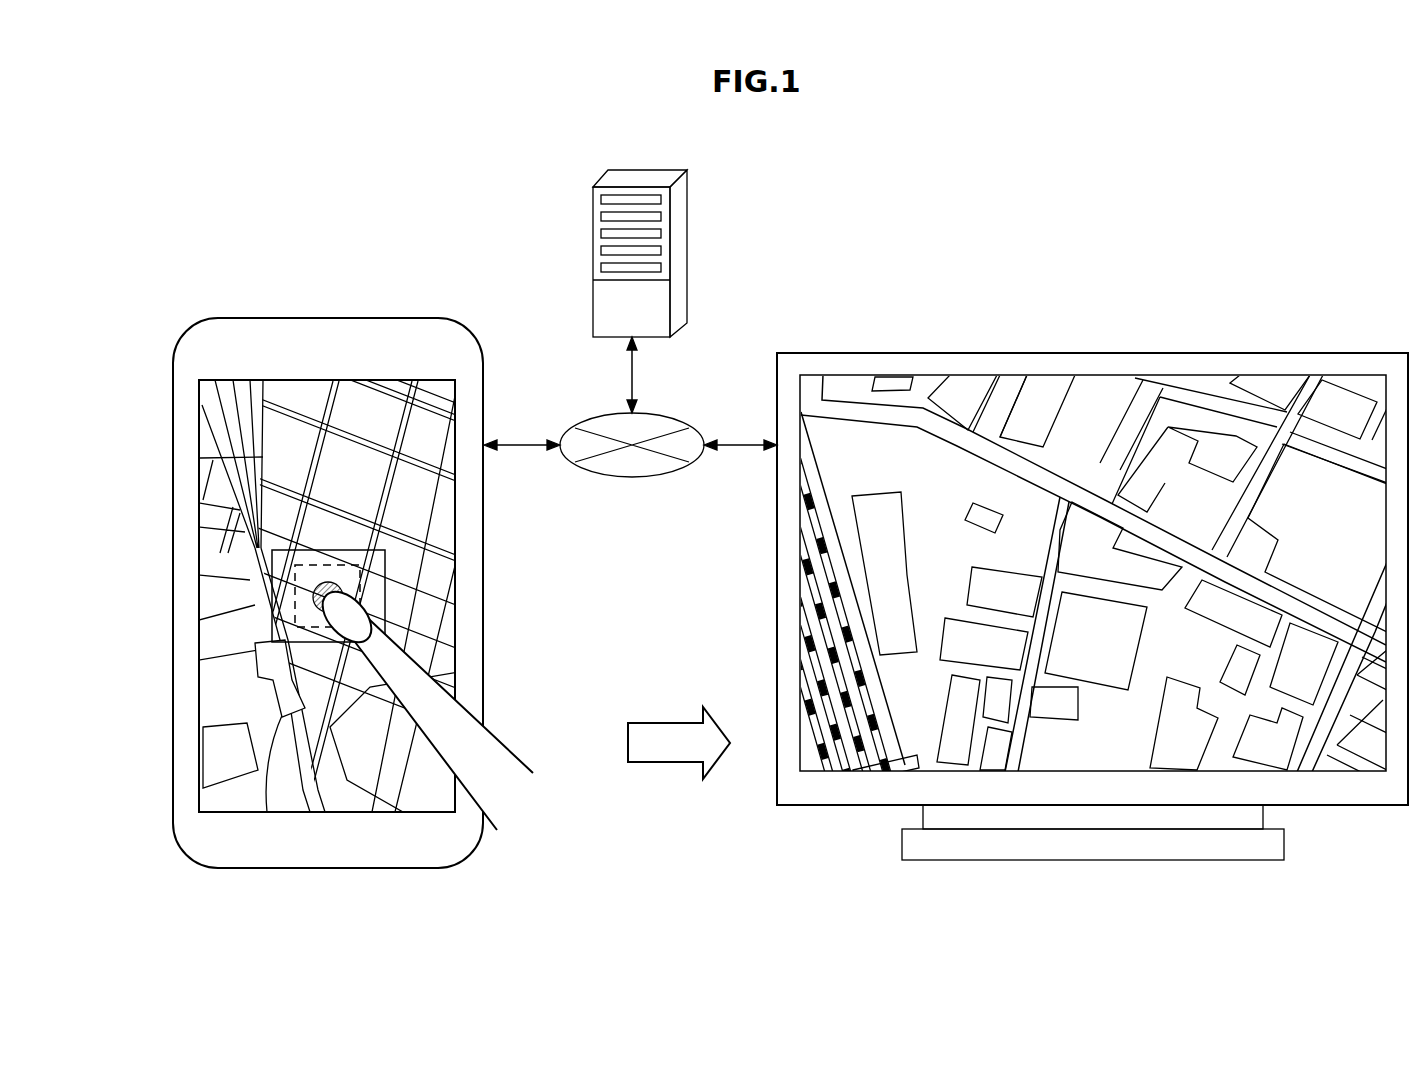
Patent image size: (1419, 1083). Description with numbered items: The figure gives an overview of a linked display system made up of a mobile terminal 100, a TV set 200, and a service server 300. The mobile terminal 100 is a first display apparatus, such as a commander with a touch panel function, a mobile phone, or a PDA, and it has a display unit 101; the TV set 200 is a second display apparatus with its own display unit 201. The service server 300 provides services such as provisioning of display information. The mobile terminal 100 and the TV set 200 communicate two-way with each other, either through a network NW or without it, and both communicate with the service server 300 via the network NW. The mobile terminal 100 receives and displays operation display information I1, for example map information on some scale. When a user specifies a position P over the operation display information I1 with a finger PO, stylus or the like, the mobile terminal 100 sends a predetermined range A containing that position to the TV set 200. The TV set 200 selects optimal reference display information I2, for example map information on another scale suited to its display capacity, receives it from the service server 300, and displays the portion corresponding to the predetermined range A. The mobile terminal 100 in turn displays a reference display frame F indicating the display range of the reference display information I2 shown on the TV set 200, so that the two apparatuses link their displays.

The mobile terminal 100 is at (328, 318).
The display unit 101 is at (438, 380).
The TV set 200 is at (1093, 353).
The display unit 201 is at (1280, 376).
The service server 300 is at (638, 168).
The network NW is at (660, 418).
The operation display information I1 is at (454, 577).
The reference display information I2 is at (852, 541).
The finger PO is at (333, 688).
The position P is at (297, 570).
The predetermined range A is at (272, 603).
The reference display frame F is at (295, 627).